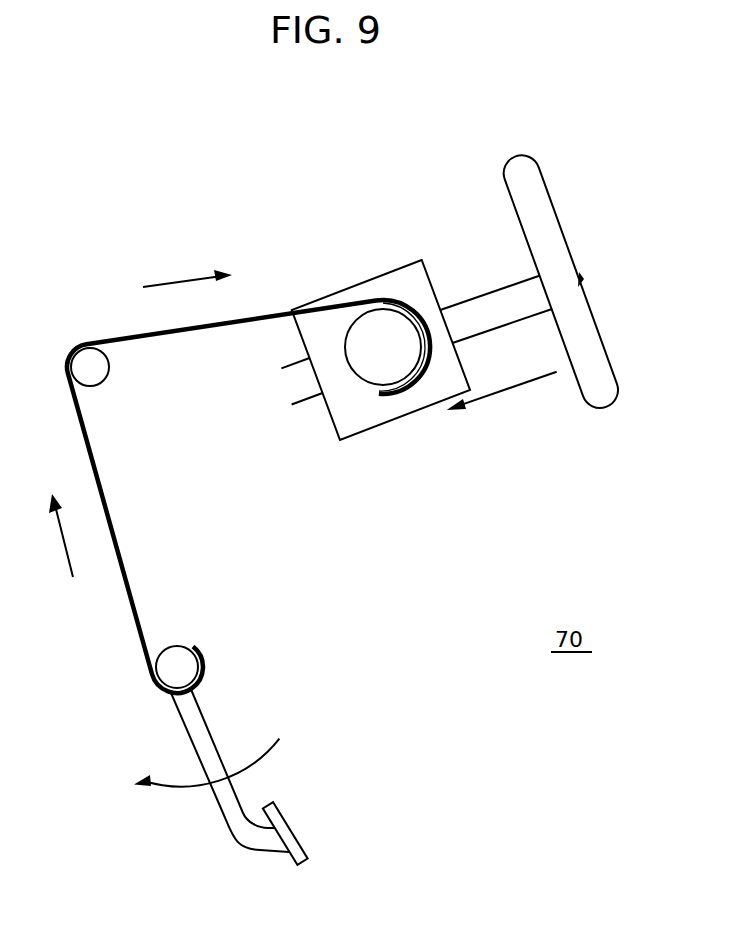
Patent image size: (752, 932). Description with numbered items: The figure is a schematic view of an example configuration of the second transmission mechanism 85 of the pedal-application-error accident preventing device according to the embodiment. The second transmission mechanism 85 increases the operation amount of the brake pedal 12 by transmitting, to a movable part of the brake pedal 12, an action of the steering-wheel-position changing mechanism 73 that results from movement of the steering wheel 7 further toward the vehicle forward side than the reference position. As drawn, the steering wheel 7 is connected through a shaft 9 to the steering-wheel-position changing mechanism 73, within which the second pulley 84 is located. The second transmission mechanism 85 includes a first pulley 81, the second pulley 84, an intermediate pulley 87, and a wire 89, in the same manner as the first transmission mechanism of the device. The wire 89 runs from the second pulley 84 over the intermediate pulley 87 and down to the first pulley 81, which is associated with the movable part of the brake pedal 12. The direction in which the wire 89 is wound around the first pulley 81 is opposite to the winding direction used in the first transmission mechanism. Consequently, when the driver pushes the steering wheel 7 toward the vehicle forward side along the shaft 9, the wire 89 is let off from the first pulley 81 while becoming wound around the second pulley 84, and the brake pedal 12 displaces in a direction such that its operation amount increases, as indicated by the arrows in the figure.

The steering wheel 7 is at (528, 171).
The steering shaft 9 is at (495, 310).
The brake pedal 12 is at (262, 842).
The steering-wheel-position changing mechanism 73 is at (364, 277).
The first pulley 81 is at (173, 653).
The second pulley 84 is at (365, 368).
The second transmission mechanism 85 is at (78, 322).
The intermediate pulley 87 is at (98, 365).
The wire 89 is at (103, 507).